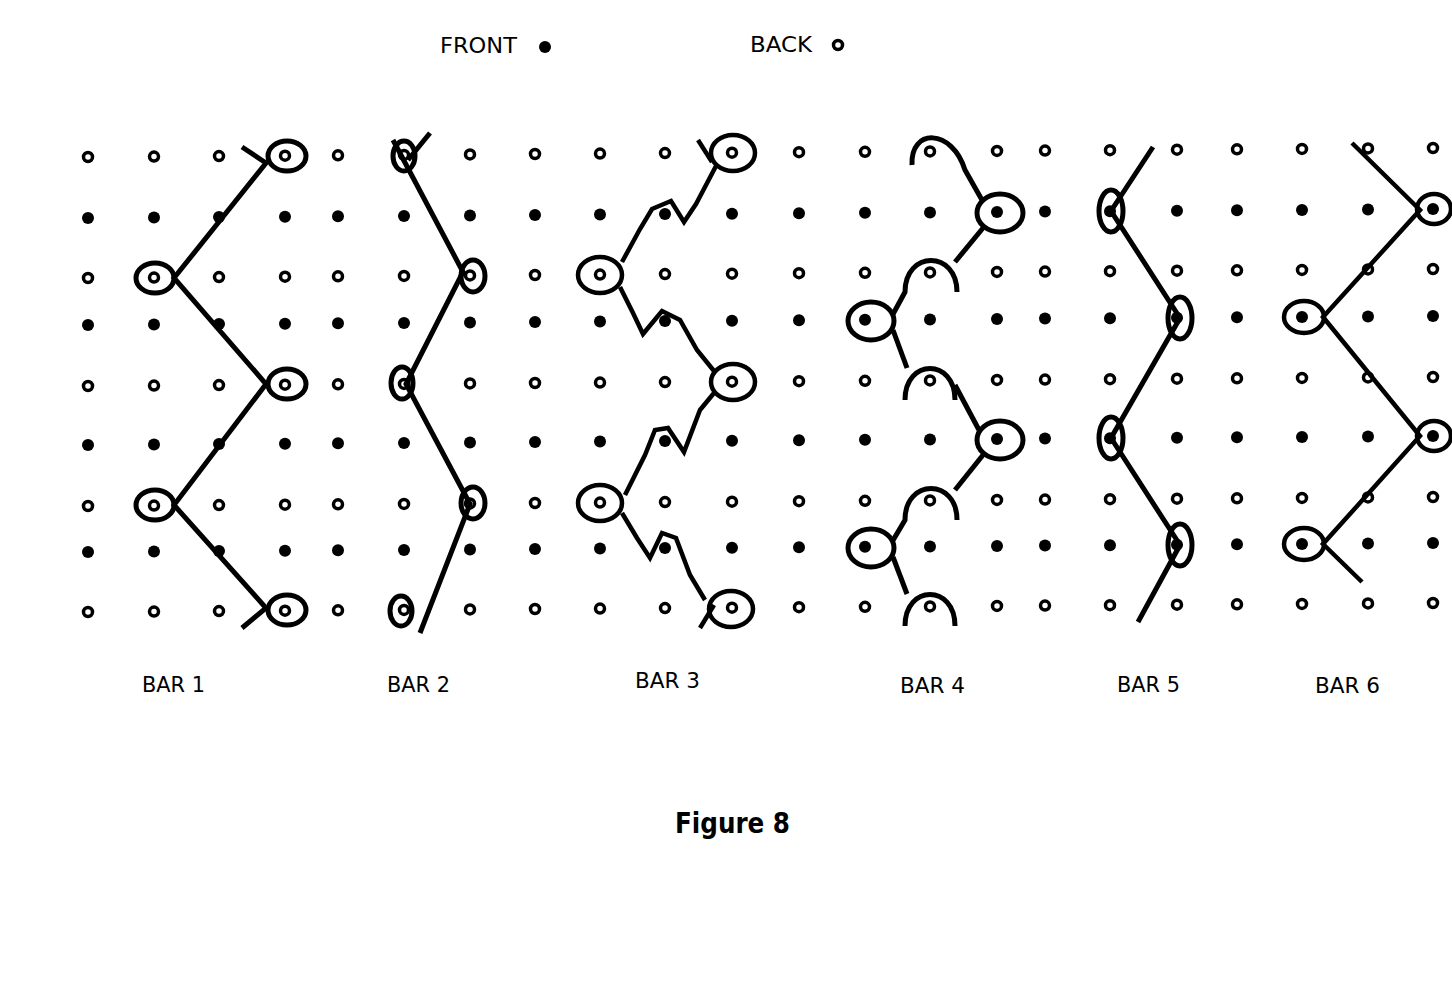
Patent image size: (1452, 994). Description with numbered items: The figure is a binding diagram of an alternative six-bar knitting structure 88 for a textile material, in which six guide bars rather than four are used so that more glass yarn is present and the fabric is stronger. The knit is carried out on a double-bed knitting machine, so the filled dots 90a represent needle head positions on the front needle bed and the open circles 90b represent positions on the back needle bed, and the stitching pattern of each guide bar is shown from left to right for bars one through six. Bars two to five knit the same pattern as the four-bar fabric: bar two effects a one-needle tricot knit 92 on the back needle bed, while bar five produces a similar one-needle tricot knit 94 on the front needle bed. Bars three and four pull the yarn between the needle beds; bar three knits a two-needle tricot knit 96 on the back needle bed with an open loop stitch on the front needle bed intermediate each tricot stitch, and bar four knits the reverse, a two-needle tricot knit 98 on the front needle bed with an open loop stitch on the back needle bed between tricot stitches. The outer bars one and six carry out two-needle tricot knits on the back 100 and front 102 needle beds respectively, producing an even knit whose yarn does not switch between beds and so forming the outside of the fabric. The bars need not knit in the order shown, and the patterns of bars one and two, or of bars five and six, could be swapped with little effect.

The knitting structure 88 is at (336, 85).
The filled dots 90a is at (403, 443).
The open circles 90b is at (863, 280).
The 1-needle tricot knit 92 is at (446, 324).
The 1-needle tricot knit 94 is at (1135, 415).
The 2-needle tricot knit 96 is at (625, 257).
The 2-needle tricot knit 98 is at (962, 421).
The 2-needle tricot knit on back needle bed 100 is at (198, 307).
The 2-needle tricot knit on front needle bed 102 is at (1385, 405).